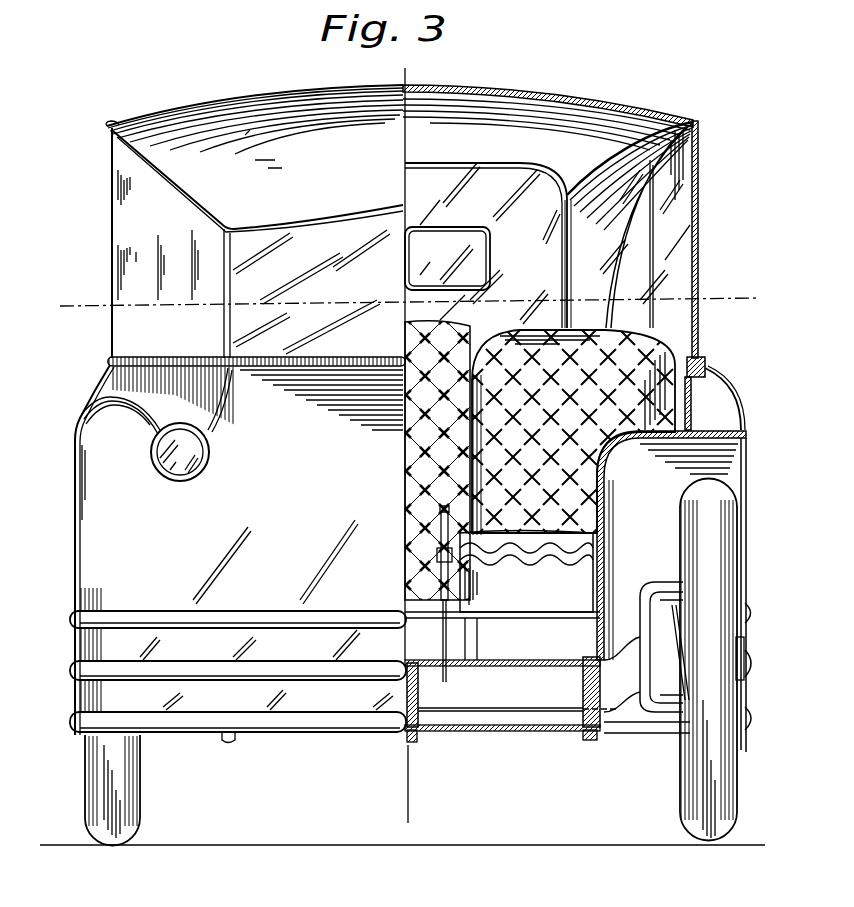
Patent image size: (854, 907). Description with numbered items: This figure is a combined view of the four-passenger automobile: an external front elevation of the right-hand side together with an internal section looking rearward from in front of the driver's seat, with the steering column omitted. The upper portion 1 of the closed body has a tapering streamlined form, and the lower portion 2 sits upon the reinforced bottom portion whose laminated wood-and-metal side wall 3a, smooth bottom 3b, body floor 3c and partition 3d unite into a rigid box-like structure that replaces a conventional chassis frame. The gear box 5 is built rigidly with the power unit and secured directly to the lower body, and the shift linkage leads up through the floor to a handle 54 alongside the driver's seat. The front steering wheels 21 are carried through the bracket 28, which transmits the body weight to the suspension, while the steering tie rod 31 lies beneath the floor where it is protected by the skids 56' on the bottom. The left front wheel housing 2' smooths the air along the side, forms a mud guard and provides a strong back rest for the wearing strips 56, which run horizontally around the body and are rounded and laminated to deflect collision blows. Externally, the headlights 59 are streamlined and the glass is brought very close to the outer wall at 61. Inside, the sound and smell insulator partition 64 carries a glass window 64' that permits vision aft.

The upper portion of closed automobile body 1 is at (125, 229).
The lower portion of streamlined body 2 is at (221, 550).
The left front wheel housing 2' is at (682, 564).
The transmission or gear box 5 is at (399, 303).
The front steering wheel 21 is at (720, 585).
The bracket 28 is at (637, 630).
The steering tie rod 31 is at (530, 712).
The body side wall 3a is at (585, 693).
The smooth bottom 3b is at (468, 731).
The body floor 3c is at (514, 661).
The partition 3d is at (418, 683).
The handle 54 is at (440, 547).
The wearing strips 56 is at (409, 662).
The skids 56' is at (420, 752).
The headlights 59 is at (152, 453).
The glass close to external wall 61 is at (706, 362).
The sound and smell insulator partition 64 is at (490, 235).
The glass window 64' is at (464, 258).